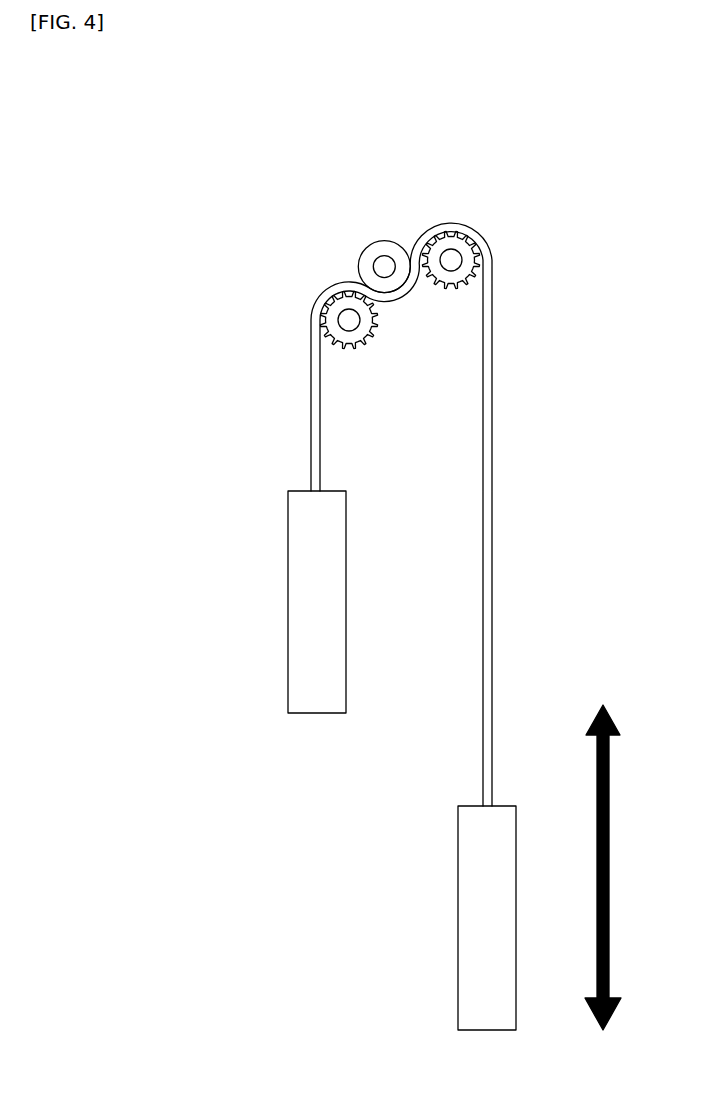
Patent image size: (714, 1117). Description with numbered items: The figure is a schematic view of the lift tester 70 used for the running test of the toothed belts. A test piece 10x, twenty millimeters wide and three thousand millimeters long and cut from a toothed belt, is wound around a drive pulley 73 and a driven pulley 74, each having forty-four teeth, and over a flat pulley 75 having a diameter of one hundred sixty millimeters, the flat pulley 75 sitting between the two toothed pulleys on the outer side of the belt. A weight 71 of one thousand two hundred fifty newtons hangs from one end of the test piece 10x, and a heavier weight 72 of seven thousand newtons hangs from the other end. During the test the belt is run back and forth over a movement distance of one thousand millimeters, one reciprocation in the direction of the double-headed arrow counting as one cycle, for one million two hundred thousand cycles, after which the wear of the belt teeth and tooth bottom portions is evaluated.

The lift tester 70 is at (569, 168).
The test piece 10x is at (487, 532).
The weight 71 is at (305, 603).
The weight 72 is at (473, 917).
The drive pulley 73 is at (453, 290).
The driven pulley 74 is at (351, 334).
The flat pulley 75 is at (383, 248).